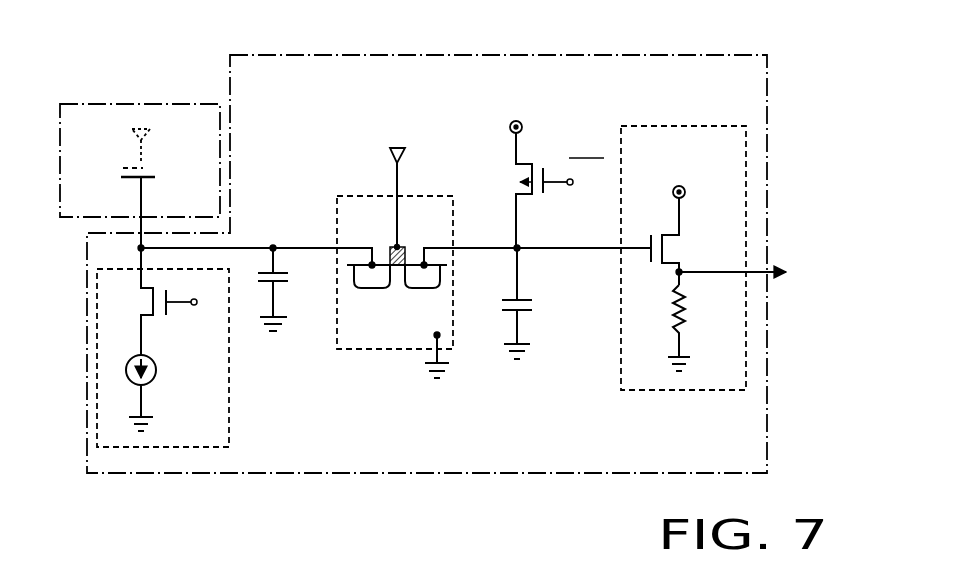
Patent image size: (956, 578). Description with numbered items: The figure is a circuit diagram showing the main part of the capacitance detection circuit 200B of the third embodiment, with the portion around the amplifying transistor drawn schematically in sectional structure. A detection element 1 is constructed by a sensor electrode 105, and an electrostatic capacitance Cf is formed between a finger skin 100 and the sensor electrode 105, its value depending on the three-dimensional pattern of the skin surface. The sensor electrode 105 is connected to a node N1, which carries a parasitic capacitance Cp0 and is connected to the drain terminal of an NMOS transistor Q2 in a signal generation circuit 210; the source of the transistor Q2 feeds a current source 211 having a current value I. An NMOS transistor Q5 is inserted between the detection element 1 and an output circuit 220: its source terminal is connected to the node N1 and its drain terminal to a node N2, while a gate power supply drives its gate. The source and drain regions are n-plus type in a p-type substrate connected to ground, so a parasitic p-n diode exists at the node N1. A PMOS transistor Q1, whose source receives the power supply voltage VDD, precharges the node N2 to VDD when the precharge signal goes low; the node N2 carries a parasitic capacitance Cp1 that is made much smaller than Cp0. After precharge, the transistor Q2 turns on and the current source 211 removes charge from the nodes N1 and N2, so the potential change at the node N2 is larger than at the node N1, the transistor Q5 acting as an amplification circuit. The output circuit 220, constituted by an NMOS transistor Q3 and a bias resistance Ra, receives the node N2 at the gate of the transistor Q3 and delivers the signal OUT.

The capacitance detection circuit 200B is at (707, 55).
The detection element 1 is at (146, 104).
The finger skin 100 is at (146, 168).
The sensor electrode 105 is at (121, 177).
The electrostatic capacitance Cf is at (158, 176).
The signal generation circuit 210 is at (229, 383).
The NMOS transistor Q2 is at (166, 301).
The current source 211 is at (157, 372).
The current value I is at (113, 373).
The node N1 is at (273, 248).
The parasitic capacitance Cp0 is at (289, 289).
The NMOS transistor Q5 is at (360, 349).
The power supply voltage VDD is at (594, 149).
The PMOS transistor Q1 is at (542, 190).
The node N2 is at (517, 248).
The parasitic capacitance Cp1 is at (532, 303).
The output circuit 220 is at (695, 124).
The NMOS transistor Q3 is at (678, 241).
The output OUT is at (748, 263).
The bias resistance Ra is at (695, 328).